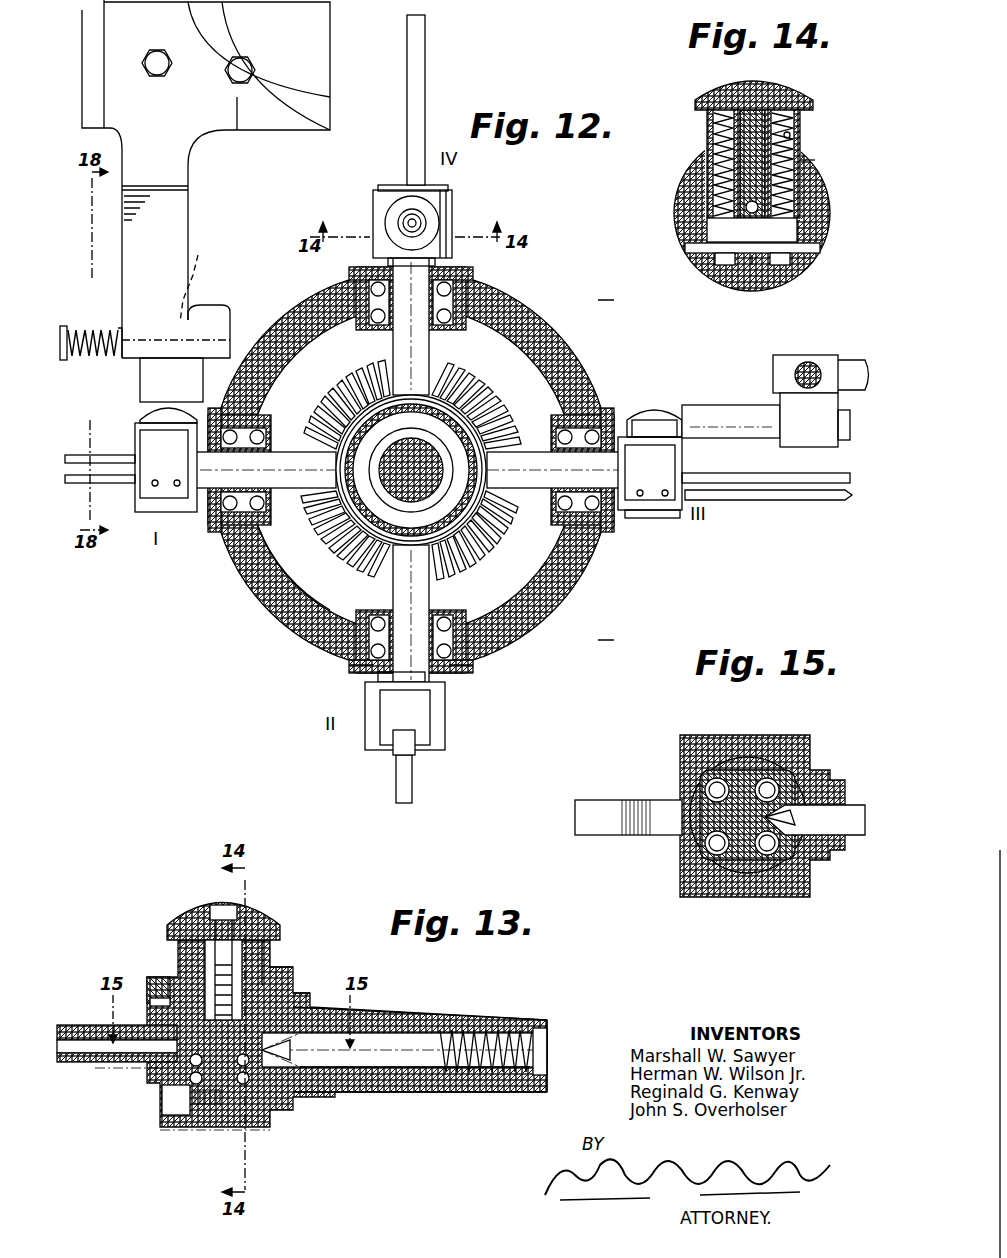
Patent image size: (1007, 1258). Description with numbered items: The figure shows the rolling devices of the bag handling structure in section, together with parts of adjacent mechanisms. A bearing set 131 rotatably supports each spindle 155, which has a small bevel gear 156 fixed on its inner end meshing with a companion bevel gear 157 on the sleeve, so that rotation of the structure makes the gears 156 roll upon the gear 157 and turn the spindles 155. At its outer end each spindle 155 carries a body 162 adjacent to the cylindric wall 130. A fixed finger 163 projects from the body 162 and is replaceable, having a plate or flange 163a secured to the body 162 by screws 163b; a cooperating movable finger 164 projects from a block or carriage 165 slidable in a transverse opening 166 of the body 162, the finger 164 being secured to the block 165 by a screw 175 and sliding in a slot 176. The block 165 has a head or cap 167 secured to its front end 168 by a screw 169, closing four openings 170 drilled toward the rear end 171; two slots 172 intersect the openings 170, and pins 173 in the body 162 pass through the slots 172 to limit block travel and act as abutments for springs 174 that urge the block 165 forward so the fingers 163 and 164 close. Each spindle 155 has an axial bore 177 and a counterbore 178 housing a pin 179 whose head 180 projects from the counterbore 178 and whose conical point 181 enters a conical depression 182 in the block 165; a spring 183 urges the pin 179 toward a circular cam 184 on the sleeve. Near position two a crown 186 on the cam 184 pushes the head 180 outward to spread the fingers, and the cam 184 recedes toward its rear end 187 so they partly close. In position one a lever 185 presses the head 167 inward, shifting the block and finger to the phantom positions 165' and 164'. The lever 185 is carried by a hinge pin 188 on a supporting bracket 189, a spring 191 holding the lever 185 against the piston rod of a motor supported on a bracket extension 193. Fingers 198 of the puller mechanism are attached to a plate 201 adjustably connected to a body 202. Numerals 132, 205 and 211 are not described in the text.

In FIG. 12, the cylindric wall 130 is at (546, 333).
In FIG. 12, the bearing set 131 is at (360, 668).
In FIG. 12, the cover plate 132 is at (462, 672).
In FIG. 12, the spindle 155 is at (476, 285).
In FIG. 13, the spindle 155 is at (395, 1008).
In FIG. 12, the small bevel gear 156 is at (345, 615).
In FIG. 12, the companion bevel gear 157 is at (300, 590).
In FIG. 12, the body 162 is at (452, 210).
In FIG. 14, the body 162 is at (825, 210).
In FIG. 15, the body 162 is at (740, 740).
In FIG. 13, the body 162 is at (175, 960).
In FIG. 12, the fixed finger 163 is at (425, 130).
In FIG. 13, the fixed finger 163 is at (95, 1025).
In FIG. 12, the plate or flange 163a is at (380, 188).
In FIG. 13, the plate or flange 163a is at (160, 978).
In FIG. 13, the screws 163b is at (152, 998).
In FIG. 12, the movable finger 164 is at (458, 506).
In FIG. 13, the movable finger 164 is at (117, 1081).
In FIG. 13, the movable finger in phantom position 164' is at (127, 1086).
In FIG. 12, the block or carriage 165 is at (660, 530).
In FIG. 14, the block or carriage 165 is at (824, 117).
In FIG. 13, the block in phantom position 165' is at (215, 1147).
In FIG. 14, the transverse opening 166 is at (820, 175).
In FIG. 13, the transverse opening 166 is at (285, 975).
In FIG. 12, the head or cap 167 is at (390, 230).
In FIG. 14, the head or cap 167 is at (775, 78).
In FIG. 13, the head or cap 167 is at (262, 920).
In FIG. 13, the front end 168 is at (270, 950).
In FIG. 13, the screw 169 is at (222, 905).
In FIG. 14, the openings 170 is at (790, 135).
In FIG. 15, the openings 170 is at (770, 780).
In FIG. 14, the rear end 171 is at (785, 285).
In FIG. 14, the slots 172 is at (752, 255).
In FIG. 13, the slots 172 is at (268, 1090).
In FIG. 14, the pins 173 is at (820, 245).
In FIG. 13, the pins 173 is at (262, 1110).
In FIG. 14, the springs 174 is at (800, 160).
In FIG. 15, the springs 174 is at (800, 775).
In FIG. 13, the screw 175 is at (165, 1100).
In FIG. 12, the slot 176 is at (395, 745).
In FIG. 15, the slot 176 is at (682, 785).
In FIG. 13, the axial bore 177 is at (400, 1070).
In FIG. 13, the counterbore 178 is at (495, 1028).
In FIG. 15, the pin 179 is at (840, 830).
In FIG. 13, the pin 179 is at (425, 1070).
In FIG. 12, the head 180 is at (345, 412).
In FIG. 13, the head 180 is at (552, 1030).
In FIG. 13, the conical point 181 is at (292, 1055).
In FIG. 14, the conical depression 182 is at (707, 230).
In FIG. 13, the conical depression 182 is at (300, 1000).
In FIG. 13, the spring 183 is at (540, 1025).
In FIG. 12, the circular cam 184 is at (355, 385).
In FIG. 12, the lever 185 is at (213, 335).
In FIG. 12, the crown 186 is at (350, 540).
In FIG. 12, the rear end 187 is at (470, 410).
In FIG. 12, the hinge pin 188 is at (208, 282).
In FIG. 12, the supporting bracket 189 is at (160, 248).
In FIG. 12, the spring 191 is at (105, 330).
In FIG. 12, the bracket extension 193 is at (254, 120).
In FIG. 12, the fingers 198 is at (690, 405).
In FIG. 12, the plate 201 is at (810, 435).
In FIG. 12, the body 202 is at (830, 370).
In FIG. 12, the bolt 205 is at (845, 440).
In FIG. 12, the pivot pin 211 is at (809, 360).